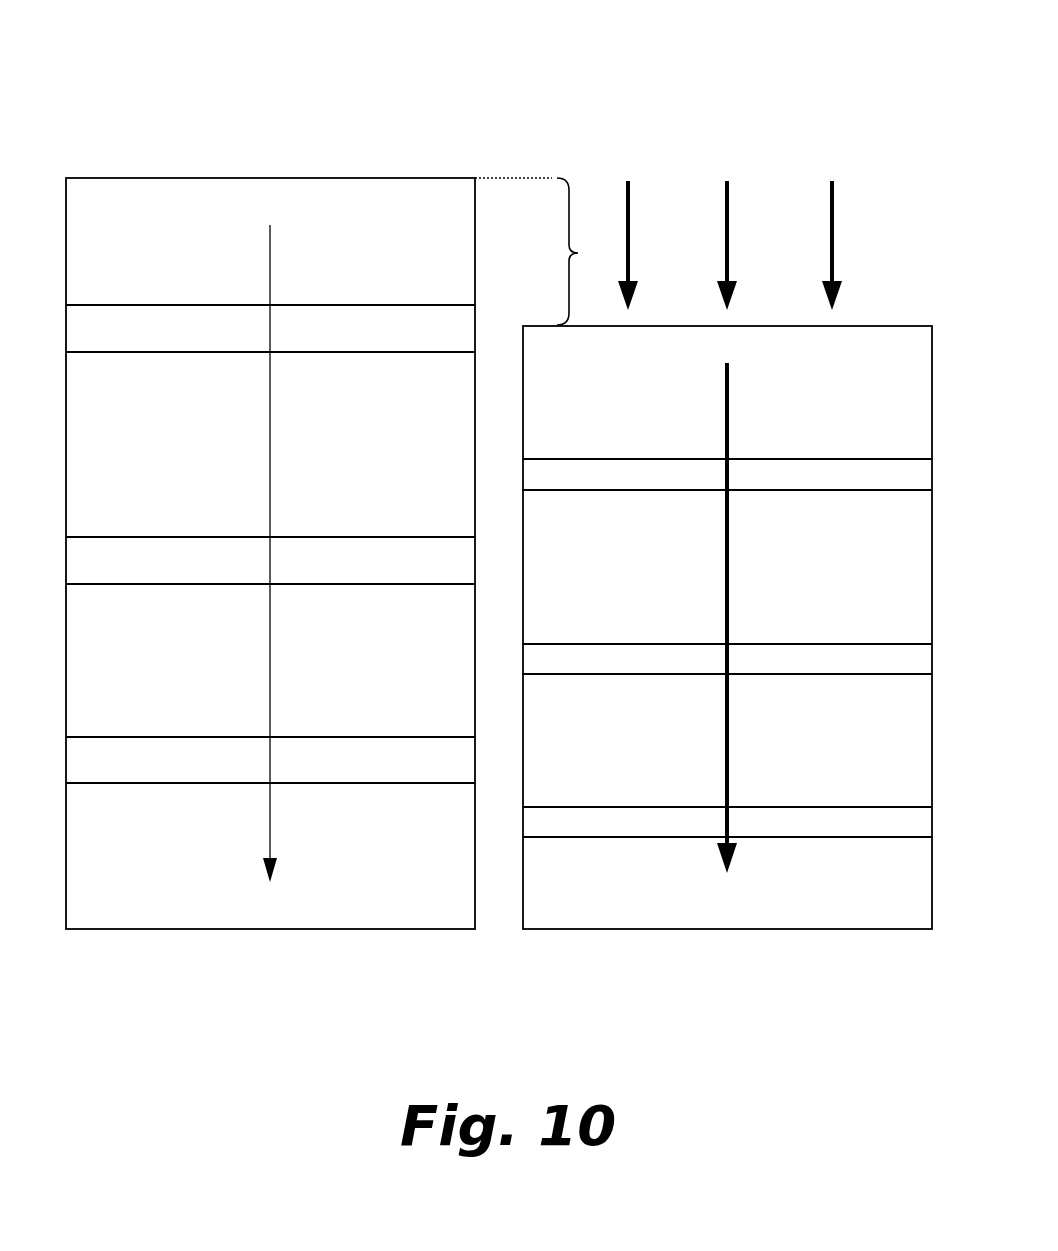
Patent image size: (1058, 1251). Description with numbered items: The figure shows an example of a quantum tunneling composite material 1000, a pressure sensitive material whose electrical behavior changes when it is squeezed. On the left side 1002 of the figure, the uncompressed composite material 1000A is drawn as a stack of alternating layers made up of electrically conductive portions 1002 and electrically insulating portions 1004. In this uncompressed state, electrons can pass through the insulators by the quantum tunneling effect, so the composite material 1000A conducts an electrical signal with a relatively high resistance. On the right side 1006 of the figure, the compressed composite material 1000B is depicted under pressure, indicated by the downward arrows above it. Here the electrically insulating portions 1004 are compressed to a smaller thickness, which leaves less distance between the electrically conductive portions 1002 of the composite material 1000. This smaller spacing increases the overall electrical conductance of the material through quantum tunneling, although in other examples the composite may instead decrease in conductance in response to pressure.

The quantum tunneling composite material 1000 is at (333, 72).
The uncompressed composite material 1000A is at (259, 510).
The compressed composite material 1000B is at (866, 270).
The electrically conductive portions 1002 is at (160, 425).
The electrically insulating portions 1004 is at (160, 573).
The right side 1006 is at (668, 175).